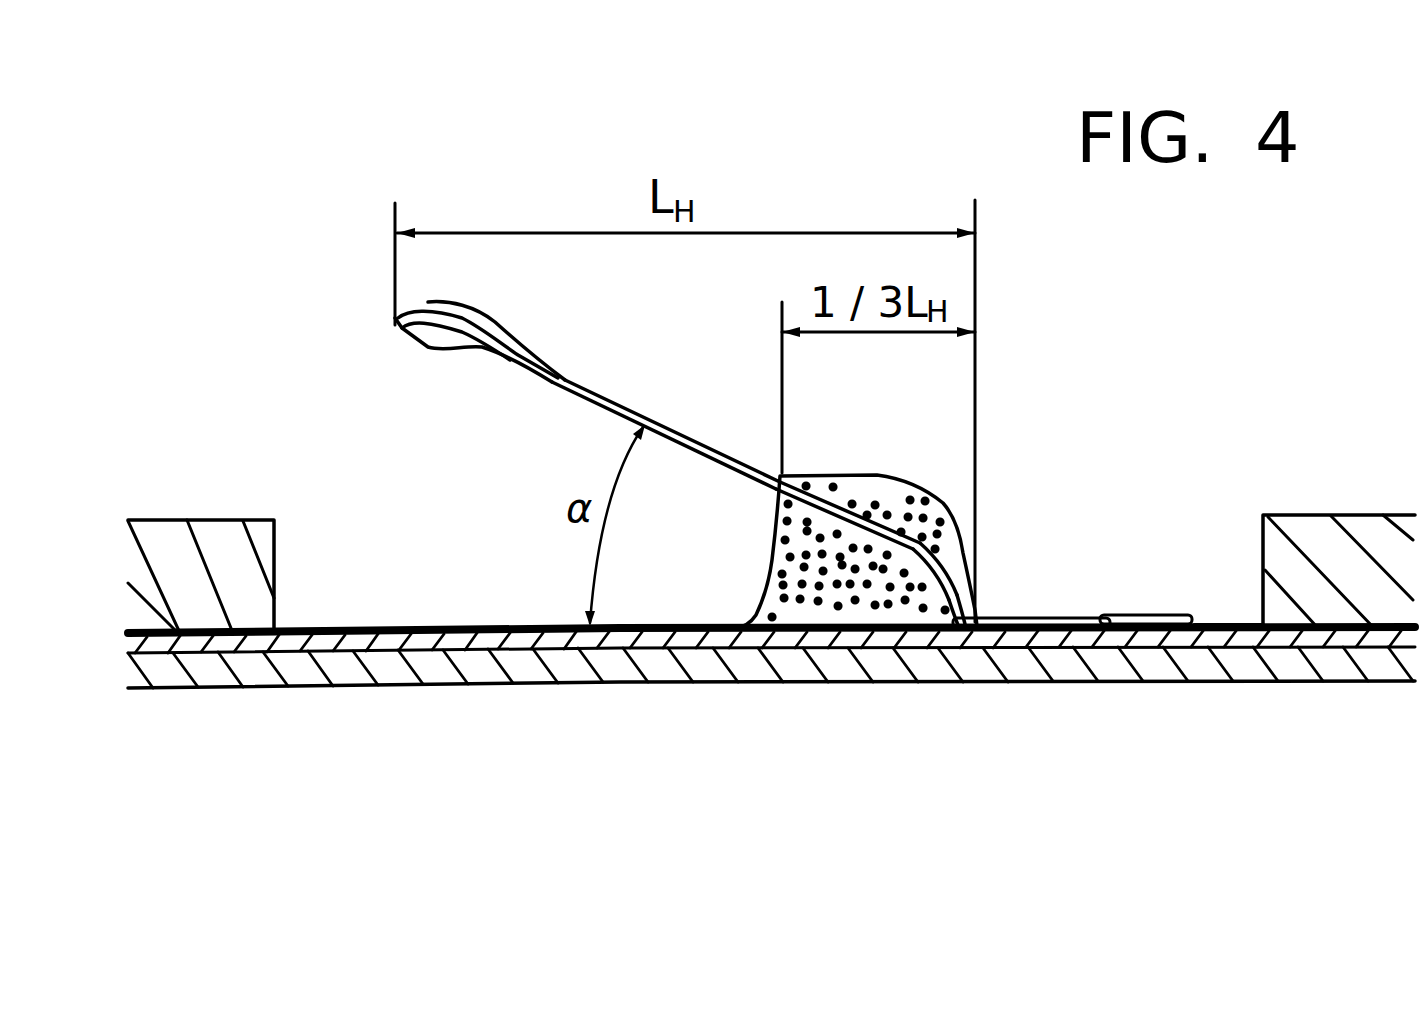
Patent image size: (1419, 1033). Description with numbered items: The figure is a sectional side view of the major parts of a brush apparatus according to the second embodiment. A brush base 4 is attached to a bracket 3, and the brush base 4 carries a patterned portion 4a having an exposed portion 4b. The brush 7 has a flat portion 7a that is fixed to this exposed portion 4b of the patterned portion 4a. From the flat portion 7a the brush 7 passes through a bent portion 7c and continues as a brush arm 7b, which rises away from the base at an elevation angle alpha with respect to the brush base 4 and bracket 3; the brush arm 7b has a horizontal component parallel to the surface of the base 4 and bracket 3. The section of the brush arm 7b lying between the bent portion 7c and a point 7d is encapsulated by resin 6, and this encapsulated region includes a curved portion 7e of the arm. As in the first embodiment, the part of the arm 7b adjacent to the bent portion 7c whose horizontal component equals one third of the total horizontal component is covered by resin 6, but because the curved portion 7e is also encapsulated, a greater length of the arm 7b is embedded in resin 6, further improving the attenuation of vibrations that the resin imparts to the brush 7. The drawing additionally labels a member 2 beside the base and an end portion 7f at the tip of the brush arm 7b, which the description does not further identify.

The hatched block (terminal member) 2 is at (1328, 545).
The bracket 3 is at (1208, 662).
The brush base 4 is at (1028, 640).
The patterned portion 4a is at (368, 628).
The exposed portion 4b is at (1228, 625).
The resin 6 is at (813, 573).
The brush 7 is at (733, 504).
The flat portion 7a is at (1072, 564).
The brush arm 7b is at (670, 424).
The bent portion 7c is at (975, 623).
The point 7d is at (783, 472).
The curved portion 7e is at (920, 557).
The folded end of lead 7f is at (427, 302).